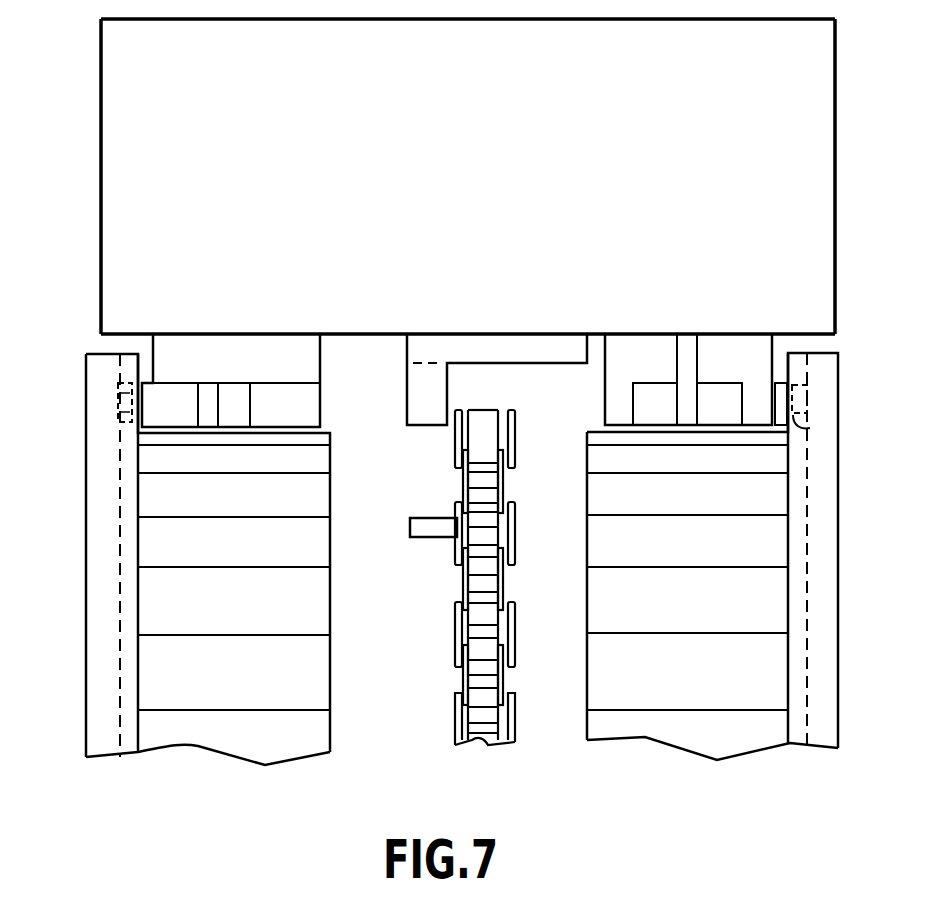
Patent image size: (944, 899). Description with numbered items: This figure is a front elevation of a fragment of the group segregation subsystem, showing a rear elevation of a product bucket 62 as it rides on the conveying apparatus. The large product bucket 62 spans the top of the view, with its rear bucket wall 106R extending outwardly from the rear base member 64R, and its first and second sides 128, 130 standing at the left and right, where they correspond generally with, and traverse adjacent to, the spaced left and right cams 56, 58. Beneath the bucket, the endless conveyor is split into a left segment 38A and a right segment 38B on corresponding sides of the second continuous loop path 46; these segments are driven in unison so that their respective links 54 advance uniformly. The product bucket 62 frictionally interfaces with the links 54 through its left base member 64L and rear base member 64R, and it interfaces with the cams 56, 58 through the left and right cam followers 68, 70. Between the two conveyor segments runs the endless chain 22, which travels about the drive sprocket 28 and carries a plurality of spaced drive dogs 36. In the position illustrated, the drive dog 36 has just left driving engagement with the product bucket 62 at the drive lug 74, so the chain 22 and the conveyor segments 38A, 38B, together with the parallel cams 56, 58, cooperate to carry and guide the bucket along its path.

The product bucket 62 is at (92, 256).
The rear bucket wall 106R is at (431, 123).
The first side 128 is at (101, 128).
The second side 130 is at (835, 153).
The left base member 64L is at (178, 397).
The rear base member 64R is at (735, 350).
The drive lug 74 is at (407, 389).
The drive dog 36 is at (427, 518).
The endless chain 22 is at (515, 722).
The drive sprocket 28 is at (487, 742).
The left segment 38A is at (212, 748).
The right segment 38B is at (702, 740).
The second continuous loop path 46 is at (170, 668).
The links 54 is at (137, 437).
The left cam 56 is at (122, 422).
The right cam 58 is at (800, 620).
The left cam follower 68 is at (125, 388).
The right cam follower 70 is at (808, 432).